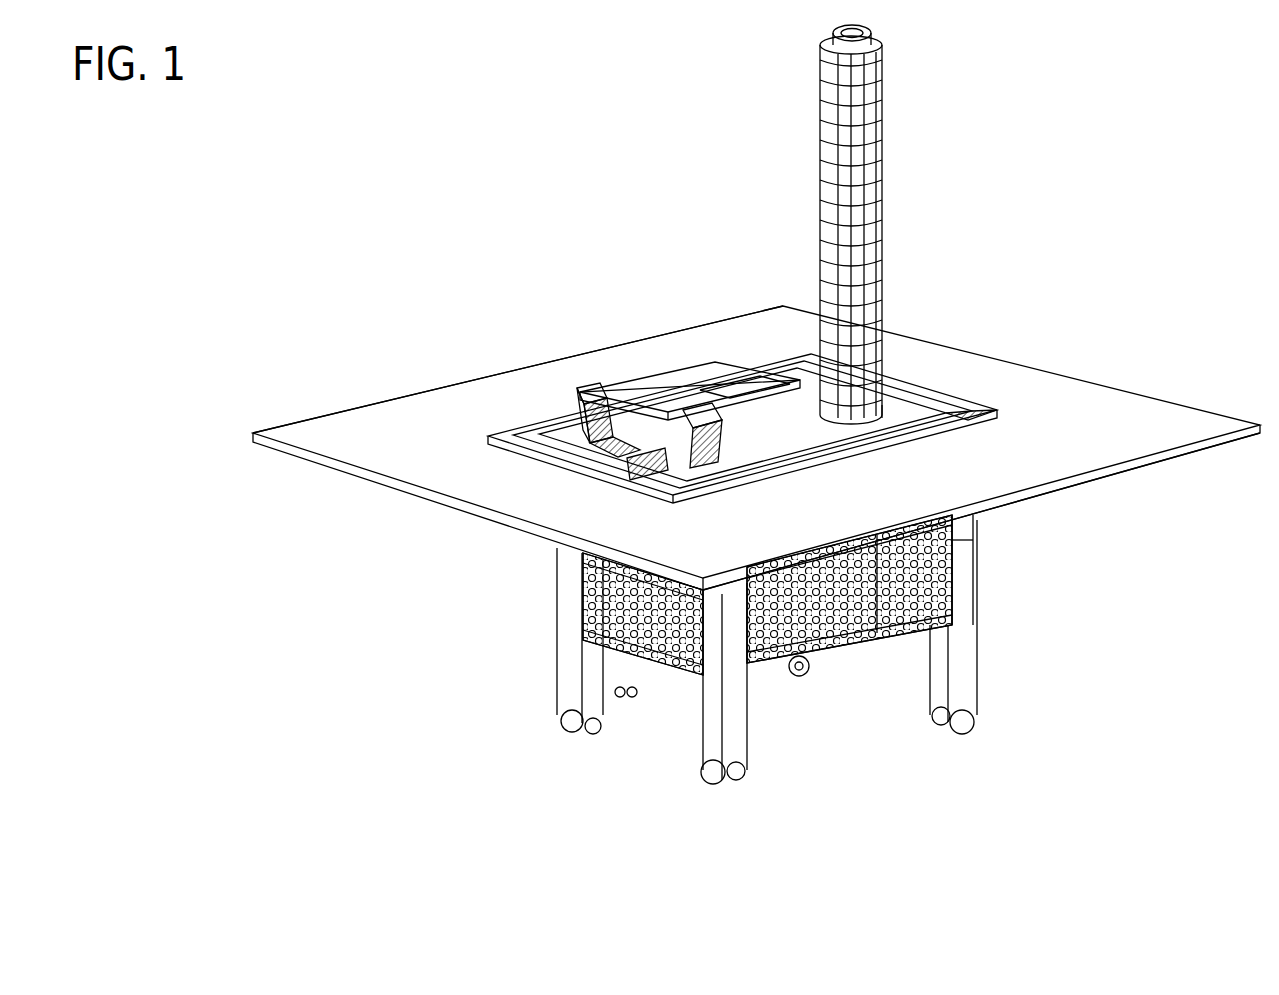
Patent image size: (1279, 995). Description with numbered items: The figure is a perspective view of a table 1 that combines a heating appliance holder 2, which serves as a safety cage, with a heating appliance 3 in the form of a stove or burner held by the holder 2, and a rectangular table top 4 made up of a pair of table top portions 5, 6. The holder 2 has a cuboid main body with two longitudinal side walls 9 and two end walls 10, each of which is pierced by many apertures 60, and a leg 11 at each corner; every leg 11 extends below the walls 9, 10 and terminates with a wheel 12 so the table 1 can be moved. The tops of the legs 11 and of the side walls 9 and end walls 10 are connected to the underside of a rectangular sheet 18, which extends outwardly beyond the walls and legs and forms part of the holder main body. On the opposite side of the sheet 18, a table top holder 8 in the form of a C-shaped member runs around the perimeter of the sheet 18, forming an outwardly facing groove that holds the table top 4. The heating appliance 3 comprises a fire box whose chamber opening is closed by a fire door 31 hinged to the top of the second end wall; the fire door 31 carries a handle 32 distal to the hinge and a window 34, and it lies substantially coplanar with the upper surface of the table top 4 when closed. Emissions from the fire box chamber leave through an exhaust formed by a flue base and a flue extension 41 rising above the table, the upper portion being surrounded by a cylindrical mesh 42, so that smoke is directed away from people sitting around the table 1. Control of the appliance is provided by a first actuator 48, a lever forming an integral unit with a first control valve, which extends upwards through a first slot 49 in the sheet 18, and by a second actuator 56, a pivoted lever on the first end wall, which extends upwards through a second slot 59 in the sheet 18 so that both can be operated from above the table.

The table 1 is at (337, 585).
The heating appliance holder 2 is at (907, 650).
The heating appliance 3 is at (795, 832).
The table top 4 is at (1166, 380).
The table top portion 5 is at (345, 432).
The table top portion 6 is at (1115, 440).
The table top holder 8 is at (964, 392).
The longitudinal side wall 9 is at (950, 568).
The end wall 10 is at (585, 572).
The leg 11 is at (557, 673).
The wheel 12 is at (563, 730).
The rectangular sheet 18 is at (890, 415).
The fire door 31 is at (707, 400).
The handle 32 is at (613, 393).
The window 34 is at (750, 410).
The flue extension 41 is at (876, 36).
The cylindrical mesh 42 is at (820, 150).
The first actuator 48 is at (657, 393).
The first slot 49 is at (600, 470).
The second actuator 56 is at (573, 410).
The second slot 59 is at (540, 460).
The apertures 60 is at (637, 670).